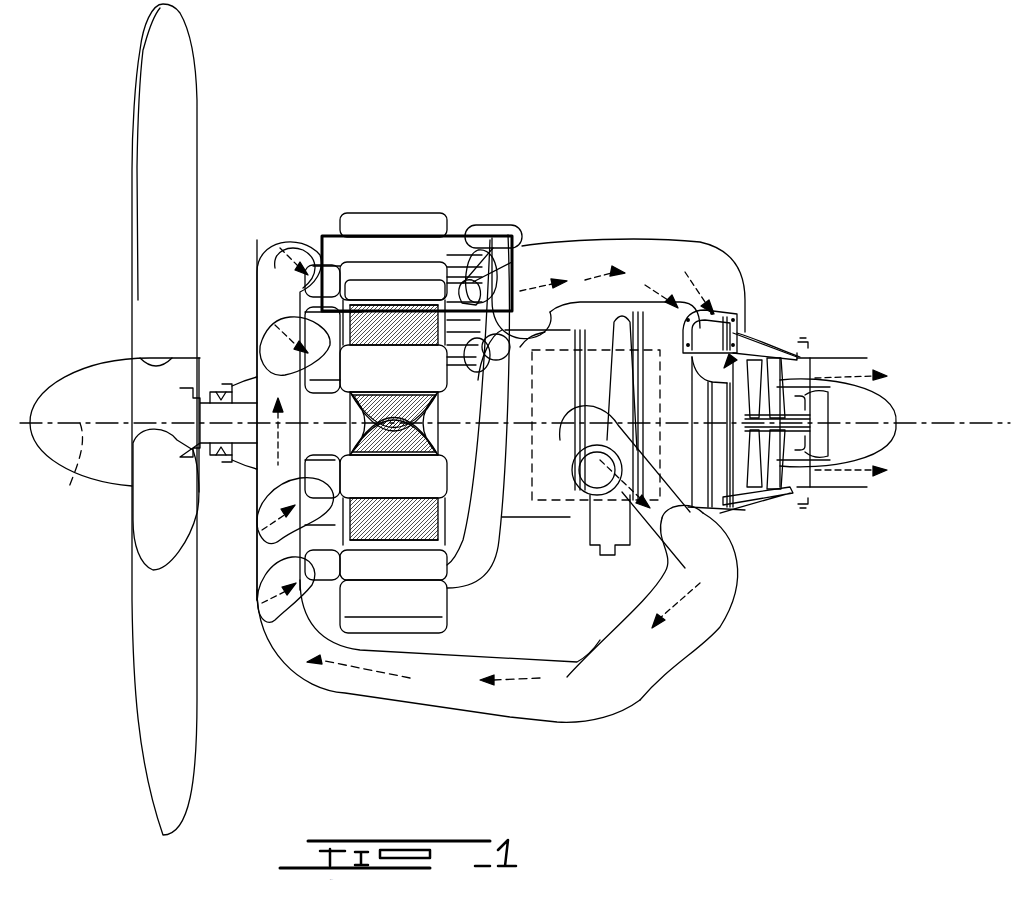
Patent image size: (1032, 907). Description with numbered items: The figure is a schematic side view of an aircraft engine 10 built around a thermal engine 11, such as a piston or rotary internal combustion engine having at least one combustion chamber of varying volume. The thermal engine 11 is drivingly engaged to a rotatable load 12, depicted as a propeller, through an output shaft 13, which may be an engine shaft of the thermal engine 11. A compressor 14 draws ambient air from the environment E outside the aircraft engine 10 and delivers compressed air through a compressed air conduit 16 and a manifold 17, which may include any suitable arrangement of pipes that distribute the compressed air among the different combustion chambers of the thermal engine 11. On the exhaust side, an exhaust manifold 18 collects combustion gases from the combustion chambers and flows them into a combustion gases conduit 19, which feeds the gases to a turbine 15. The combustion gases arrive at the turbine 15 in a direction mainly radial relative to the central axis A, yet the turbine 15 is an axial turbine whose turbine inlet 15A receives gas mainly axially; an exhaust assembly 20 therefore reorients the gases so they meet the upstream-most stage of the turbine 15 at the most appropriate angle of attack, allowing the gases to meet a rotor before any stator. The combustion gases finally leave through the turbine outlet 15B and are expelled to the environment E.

The aircraft engine 10 is at (628, 110).
The thermal engine 11 is at (376, 618).
The rotatable load 12 is at (180, 98).
The output shaft 13 is at (218, 385).
The compressor 14 is at (547, 520).
The turbine 15 is at (772, 517).
The turbine inlet 15A is at (727, 333).
The turbine outlet 15B is at (878, 355).
The compressed air conduit 16 is at (632, 660).
The manifold 17 is at (275, 279).
The exhaust manifold 18 is at (480, 560).
The combustion gases conduit 19 is at (548, 252).
The exhaust assembly 20 is at (668, 310).
The central axis A is at (143, 420).
The environment E is at (811, 98).